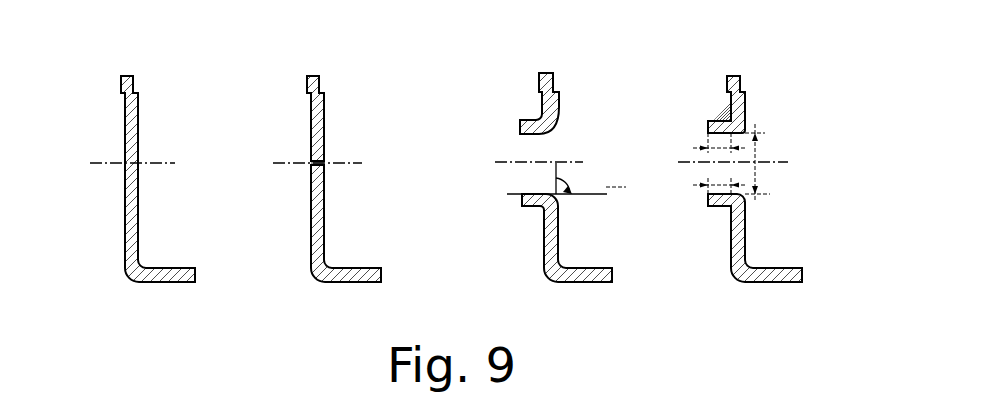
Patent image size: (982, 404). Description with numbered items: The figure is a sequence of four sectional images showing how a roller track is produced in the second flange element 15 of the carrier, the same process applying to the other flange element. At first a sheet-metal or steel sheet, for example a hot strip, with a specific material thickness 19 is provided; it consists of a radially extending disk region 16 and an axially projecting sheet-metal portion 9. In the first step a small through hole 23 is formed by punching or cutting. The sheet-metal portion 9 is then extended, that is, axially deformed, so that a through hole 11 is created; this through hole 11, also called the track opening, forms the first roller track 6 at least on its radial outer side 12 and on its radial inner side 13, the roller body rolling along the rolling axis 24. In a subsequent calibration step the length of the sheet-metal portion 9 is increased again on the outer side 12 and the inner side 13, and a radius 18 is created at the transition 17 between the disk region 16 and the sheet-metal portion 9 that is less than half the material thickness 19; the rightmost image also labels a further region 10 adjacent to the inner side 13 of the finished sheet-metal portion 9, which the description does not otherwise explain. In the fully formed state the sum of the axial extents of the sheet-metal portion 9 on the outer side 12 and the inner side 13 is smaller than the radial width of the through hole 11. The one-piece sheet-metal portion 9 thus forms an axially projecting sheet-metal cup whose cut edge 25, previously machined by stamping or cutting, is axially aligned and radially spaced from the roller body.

The second flange element 15 is at (469, 146).
The radially extending disk region 16 is at (132, 188).
The material thickness 19 is at (105, 237).
The small through hole 23 is at (324, 161).
The sheet-metal portion 9 is at (538, 117).
The radial outer side 12 is at (521, 122).
The rolling axis 24 is at (501, 162).
The through hole 11 is at (546, 148).
The cut edge 25 is at (523, 197).
The radial inner side 13 is at (540, 207).
The first roller track 6 is at (709, 134).
The joint 10 is at (712, 205).
The transition 17 is at (745, 123).
The radius 18 is at (727, 113).